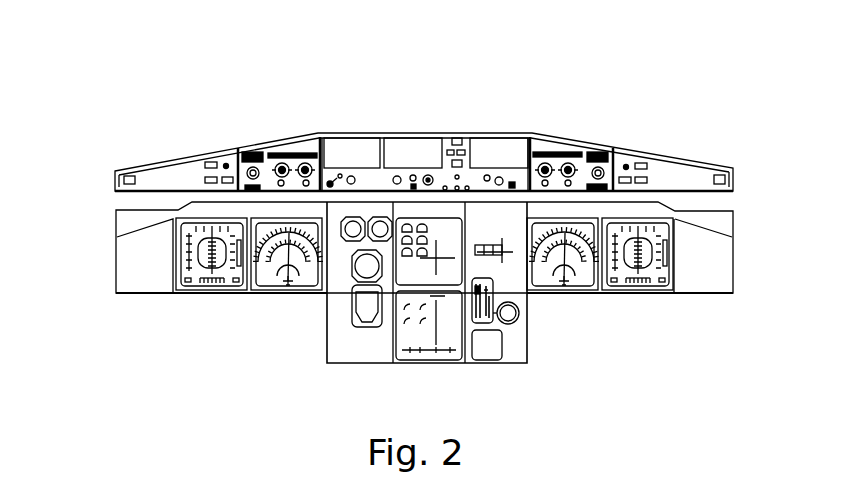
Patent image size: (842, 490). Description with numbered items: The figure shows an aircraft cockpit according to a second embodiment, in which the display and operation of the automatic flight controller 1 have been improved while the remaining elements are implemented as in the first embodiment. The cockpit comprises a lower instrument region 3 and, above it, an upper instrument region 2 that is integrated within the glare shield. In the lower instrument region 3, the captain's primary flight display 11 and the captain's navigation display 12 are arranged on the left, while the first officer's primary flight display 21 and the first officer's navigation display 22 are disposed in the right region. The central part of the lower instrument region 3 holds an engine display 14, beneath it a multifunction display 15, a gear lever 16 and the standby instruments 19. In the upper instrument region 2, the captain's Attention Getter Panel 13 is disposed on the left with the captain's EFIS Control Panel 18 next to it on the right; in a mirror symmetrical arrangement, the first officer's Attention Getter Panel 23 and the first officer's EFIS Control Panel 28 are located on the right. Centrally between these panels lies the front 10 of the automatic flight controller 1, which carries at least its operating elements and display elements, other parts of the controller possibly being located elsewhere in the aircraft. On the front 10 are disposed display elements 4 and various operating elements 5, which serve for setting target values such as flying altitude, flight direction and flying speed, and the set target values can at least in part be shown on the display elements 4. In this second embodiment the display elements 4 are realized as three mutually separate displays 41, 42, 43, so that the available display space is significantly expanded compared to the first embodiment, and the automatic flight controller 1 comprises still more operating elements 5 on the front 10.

The automatic flight controller 1 is at (406, 78).
The upper instrument region 2 is at (111, 176).
The lower instrument region 3 is at (112, 289).
The display element 4 is at (545, 131).
The operating elements 5 is at (325, 181).
The front 10 is at (457, 143).
The captain's primary flight display 11 is at (196, 296).
The captain's navigation display 12 is at (280, 296).
The captain's Attention Getter Panel 13 is at (188, 160).
The engine display 14 is at (448, 243).
The multifunction display 15 is at (405, 362).
The gear lever 16 is at (510, 356).
The captain's EFIS Control Panel 18 is at (250, 150).
The standby instruments 19 is at (347, 316).
The first officer's primary flight display 21 is at (655, 296).
The first officer's navigation display 22 is at (570, 296).
The first officer's Attention Getter Panel 23 is at (672, 160).
The first officer's EFIS Control Panel 28 is at (570, 150).
The display 41 is at (350, 146).
The display 42 is at (408, 146).
The display 43 is at (494, 146).